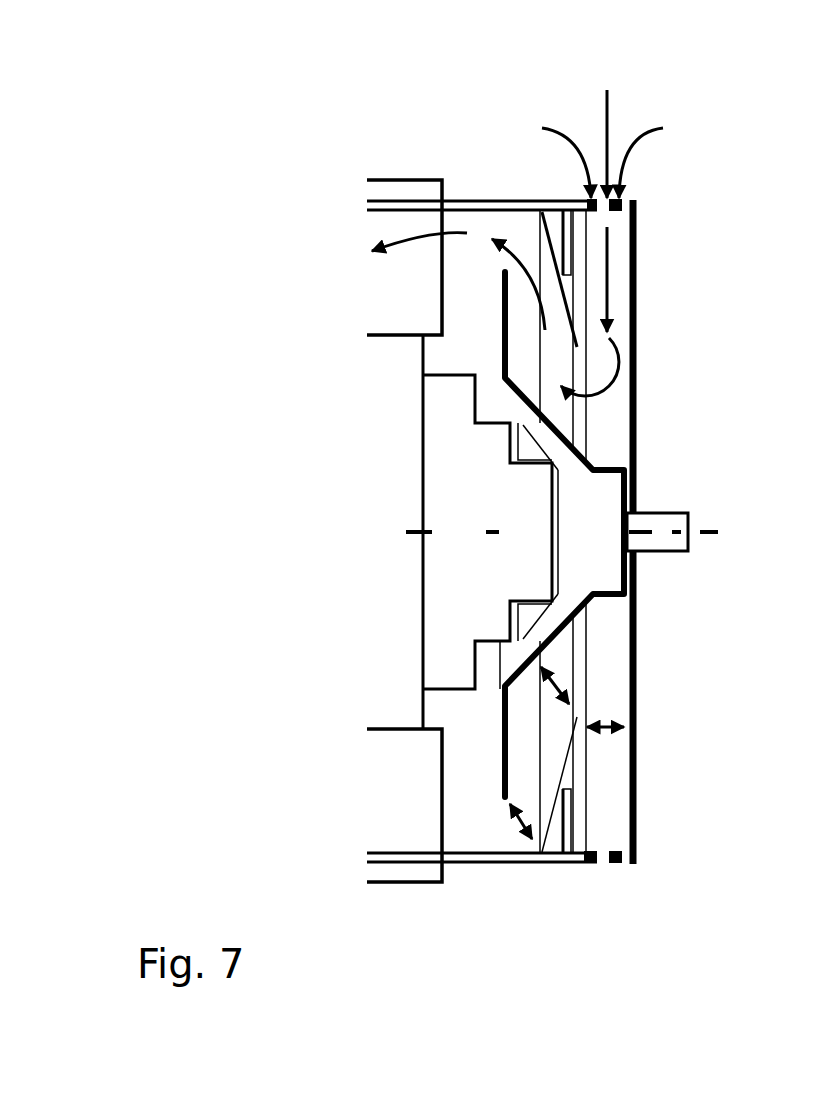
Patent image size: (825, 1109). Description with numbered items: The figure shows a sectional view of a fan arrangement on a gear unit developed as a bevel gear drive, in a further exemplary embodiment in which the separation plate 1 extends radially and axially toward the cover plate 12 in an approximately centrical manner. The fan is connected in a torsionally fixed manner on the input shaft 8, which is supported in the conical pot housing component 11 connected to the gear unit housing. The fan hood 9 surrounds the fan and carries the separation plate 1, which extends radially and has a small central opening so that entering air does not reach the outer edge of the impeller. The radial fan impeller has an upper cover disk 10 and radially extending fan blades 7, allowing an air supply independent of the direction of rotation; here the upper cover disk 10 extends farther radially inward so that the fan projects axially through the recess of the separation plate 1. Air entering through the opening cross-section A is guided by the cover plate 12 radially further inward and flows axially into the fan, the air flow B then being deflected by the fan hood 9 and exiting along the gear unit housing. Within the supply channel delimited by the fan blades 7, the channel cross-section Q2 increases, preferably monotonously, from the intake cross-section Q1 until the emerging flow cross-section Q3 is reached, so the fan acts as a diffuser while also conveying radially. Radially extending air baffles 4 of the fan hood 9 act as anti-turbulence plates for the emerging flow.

The separation plate 1 is at (594, 864).
The air baffle 4 is at (392, 284).
The fan blade 7 is at (510, 680).
The input shaft 8 is at (670, 520).
The fan hood 9 is at (493, 858).
The upper cover disk 10 is at (552, 827).
The conical pot housing component 11 is at (432, 503).
The cover plate 12 is at (638, 387).
The opening cross-section A is at (598, 342).
The air flow B is at (531, 198).
The intake cross-section Q1 is at (612, 716).
The channel cross-section Q2 is at (562, 676).
The emerging flow cross-section Q3 is at (533, 817).